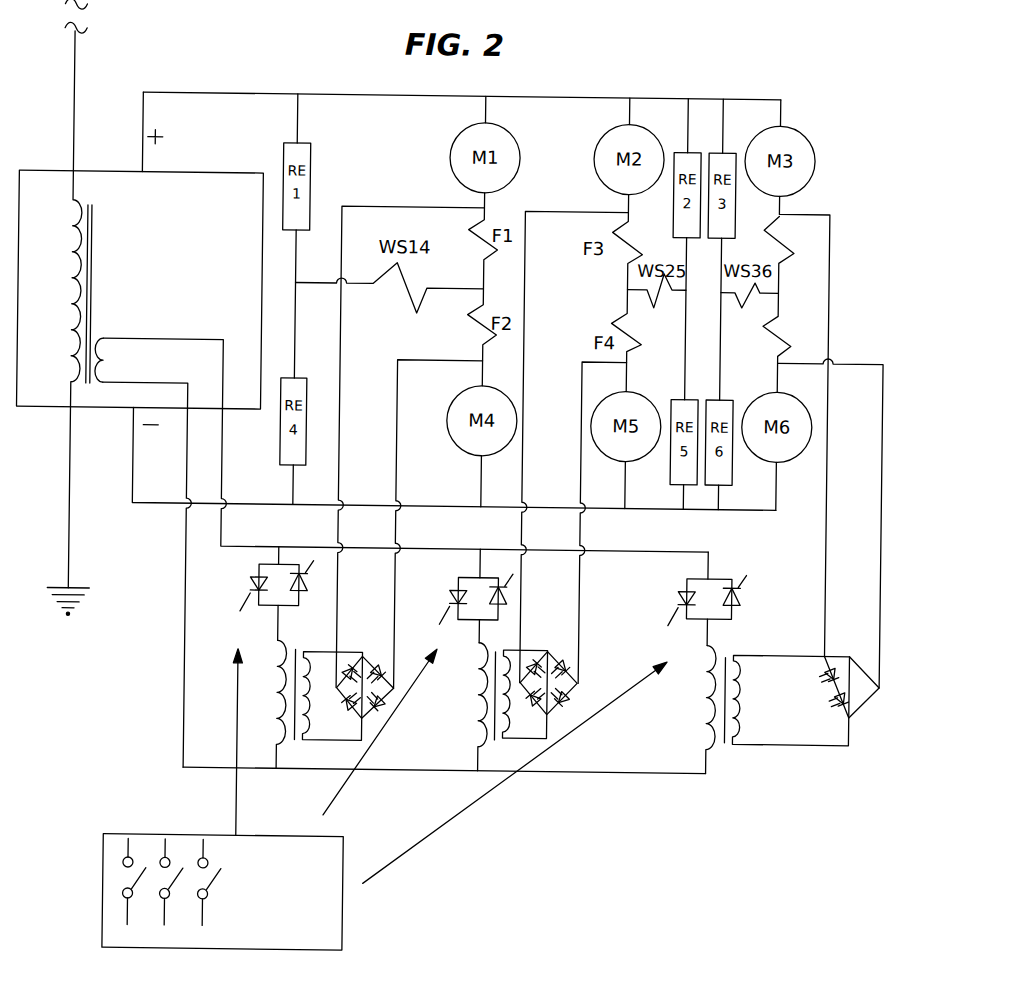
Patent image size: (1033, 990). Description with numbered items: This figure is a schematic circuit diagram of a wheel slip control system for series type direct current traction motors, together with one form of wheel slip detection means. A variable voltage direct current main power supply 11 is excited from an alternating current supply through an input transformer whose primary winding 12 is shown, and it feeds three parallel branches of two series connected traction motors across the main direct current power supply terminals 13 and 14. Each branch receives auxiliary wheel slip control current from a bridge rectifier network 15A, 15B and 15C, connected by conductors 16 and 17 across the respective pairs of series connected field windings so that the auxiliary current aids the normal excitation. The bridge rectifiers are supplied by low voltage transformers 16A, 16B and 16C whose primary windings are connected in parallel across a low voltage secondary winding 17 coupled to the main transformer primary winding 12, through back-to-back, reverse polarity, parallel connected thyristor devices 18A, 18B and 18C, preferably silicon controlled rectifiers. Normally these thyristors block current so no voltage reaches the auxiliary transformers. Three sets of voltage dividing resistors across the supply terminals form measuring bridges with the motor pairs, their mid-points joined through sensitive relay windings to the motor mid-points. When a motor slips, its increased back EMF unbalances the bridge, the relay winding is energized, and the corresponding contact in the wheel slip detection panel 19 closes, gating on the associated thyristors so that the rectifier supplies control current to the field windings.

The main power supply 11 is at (210, 175).
The primary winding 12 is at (68, 272).
The main direct current power supply terminal 13 is at (386, 94).
The main direct current power supply terminal 14 is at (378, 504).
The bridge rectifier network 15A is at (385, 679).
The bridge rectifier network 15B is at (558, 684).
The bridge rectifier network 15C is at (831, 693).
The conductor 16 is at (525, 283).
The low voltage transformer 16A is at (354, 341).
The low voltage transformer 16B is at (548, 708).
The low voltage transformer 16C is at (793, 711).
The low voltage secondary winding 17 is at (111, 363).
The thyristor devices 18A is at (287, 594).
The thyristor devices 18B is at (462, 579).
The thyristor devices 18C is at (727, 605).
The wheel slip detection panel 19 is at (222, 928).